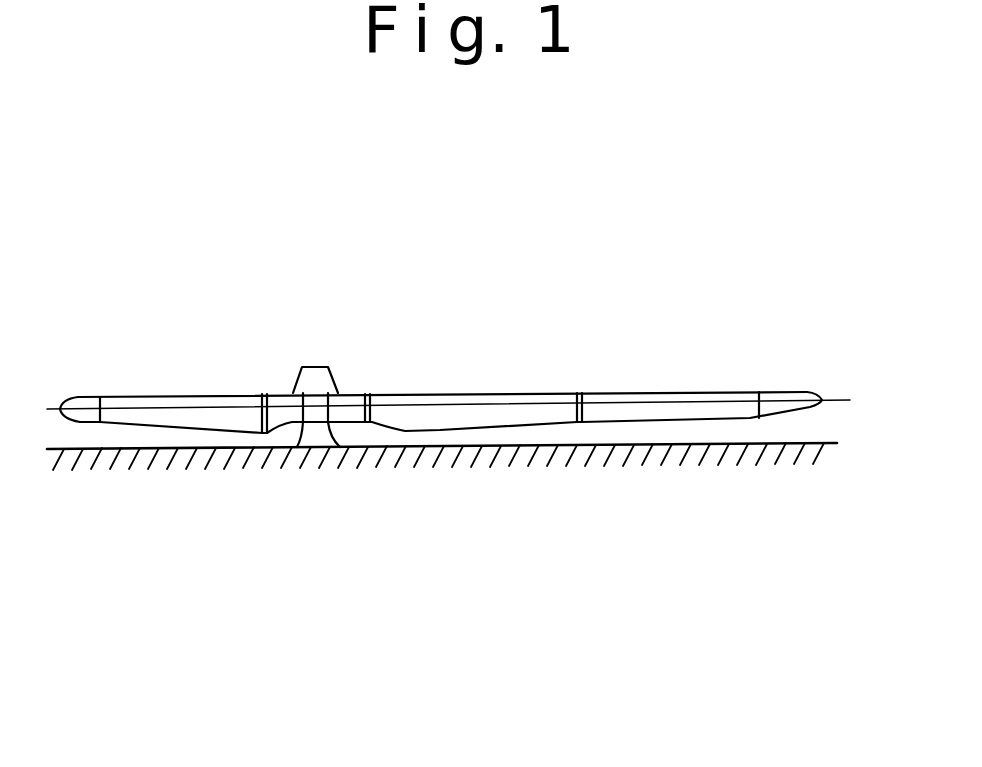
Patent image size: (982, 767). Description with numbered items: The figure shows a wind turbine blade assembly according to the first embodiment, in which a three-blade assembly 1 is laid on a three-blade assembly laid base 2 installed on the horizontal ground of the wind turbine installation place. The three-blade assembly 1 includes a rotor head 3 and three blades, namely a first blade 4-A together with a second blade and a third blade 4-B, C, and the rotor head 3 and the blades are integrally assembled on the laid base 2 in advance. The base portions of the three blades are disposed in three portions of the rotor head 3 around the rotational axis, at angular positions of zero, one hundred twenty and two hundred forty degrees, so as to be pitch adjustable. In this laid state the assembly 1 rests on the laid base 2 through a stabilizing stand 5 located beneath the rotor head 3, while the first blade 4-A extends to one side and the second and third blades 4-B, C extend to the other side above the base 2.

The three-blade assembly 1 is at (188, 362).
The three-blade assembly laid base 2 is at (763, 455).
The rotor head 3 is at (335, 370).
The first blade 4-A is at (648, 416).
The second blade and third blade 4-B, C is at (143, 430).
The stabilizing stand 5 is at (317, 435).